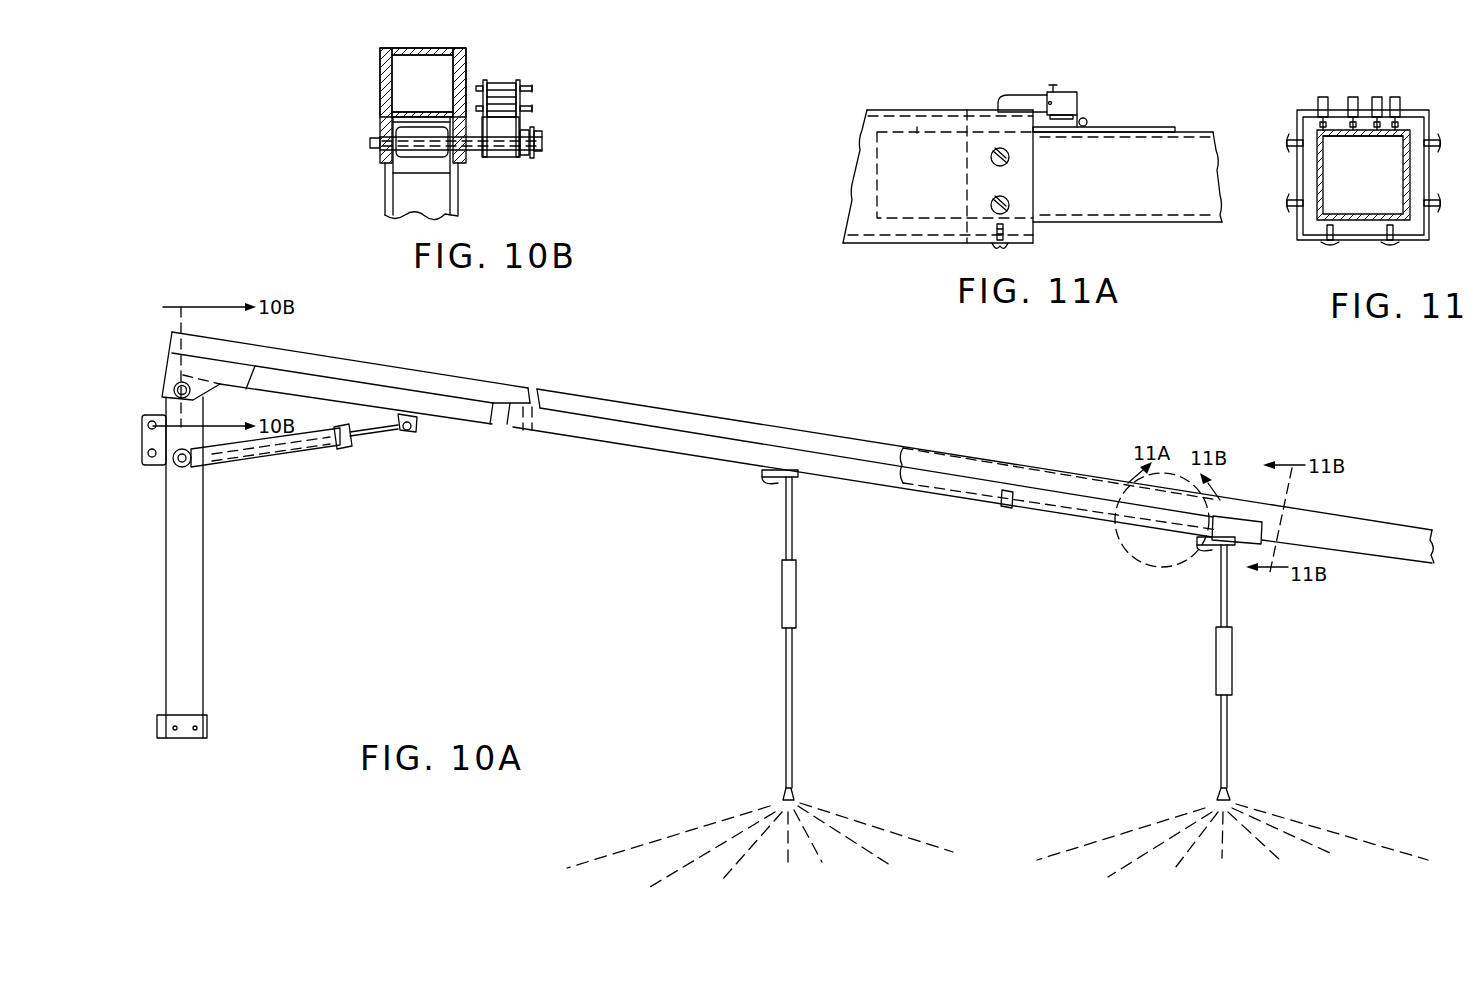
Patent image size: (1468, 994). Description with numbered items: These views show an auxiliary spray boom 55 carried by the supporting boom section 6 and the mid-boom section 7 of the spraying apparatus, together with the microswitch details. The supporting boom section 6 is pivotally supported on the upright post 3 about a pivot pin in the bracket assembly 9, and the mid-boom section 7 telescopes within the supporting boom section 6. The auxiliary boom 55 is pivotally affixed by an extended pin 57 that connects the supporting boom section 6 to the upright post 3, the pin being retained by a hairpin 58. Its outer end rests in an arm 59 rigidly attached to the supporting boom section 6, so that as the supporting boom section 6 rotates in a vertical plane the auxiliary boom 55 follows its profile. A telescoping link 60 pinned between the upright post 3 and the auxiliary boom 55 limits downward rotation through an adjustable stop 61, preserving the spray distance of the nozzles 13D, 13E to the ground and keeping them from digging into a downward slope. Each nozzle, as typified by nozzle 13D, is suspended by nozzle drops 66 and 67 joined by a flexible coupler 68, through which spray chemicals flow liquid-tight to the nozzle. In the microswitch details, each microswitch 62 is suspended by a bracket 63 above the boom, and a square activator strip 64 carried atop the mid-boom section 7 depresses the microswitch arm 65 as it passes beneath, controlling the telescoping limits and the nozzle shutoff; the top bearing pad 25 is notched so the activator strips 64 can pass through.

In FIG. 10A, the upright post 3 is at (203, 605).
In FIG. 10B, the supporting boom section 6 is at (425, 47).
In FIG. 11A, the supporting boom section 6 is at (920, 110).
In FIG. 11B, the supporting boom section 6 is at (1429, 115).
In FIG. 10A, the supporting boom section 6 is at (843, 437).
In FIG. 11A, the mid-boom section 7 is at (1130, 223).
In FIG. 11B, the mid-boom section 7 is at (1413, 205).
In FIG. 10A, the mid-boom section 7 is at (1346, 516).
In FIG. 10B, the bracket assembly 9 is at (380, 68).
In FIG. 11B, the top bearing pad 25 is at (1350, 240).
In FIG. 10B, the auxiliary spray boom 55 is at (492, 82).
In FIG. 10A, the auxiliary spray boom 55 is at (592, 440).
In FIG. 10B, the extended pin 57 is at (548, 138).
In FIG. 10B, the hairpin 58 is at (542, 152).
In FIG. 10A, the arm 59 is at (1008, 508).
In FIG. 10A, the telescoping link 60 is at (262, 455).
In FIG. 10A, the adjustable stop 61 is at (343, 449).
In FIG. 11A, the microswitch 62 is at (1060, 92).
In FIG. 11B, the microswitch 62 is at (1357, 97).
In FIG. 11A, the bracket 63 is at (1017, 95).
In FIG. 11A, the activator strip 64 is at (1150, 127).
In FIG. 11B, the activator strip 64 is at (1375, 132).
In FIG. 11A, the microswitch arm 65 is at (1088, 118).
In FIG. 10A, the nozzle drop 66 is at (793, 527).
In FIG. 10A, the nozzle drop 67 is at (792, 694).
In FIG. 10A, the flexible coupler 68 is at (797, 590).
In FIG. 10A, the nozzle 13D is at (792, 797).
In FIG. 10A, the nozzle 13E is at (1230, 796).